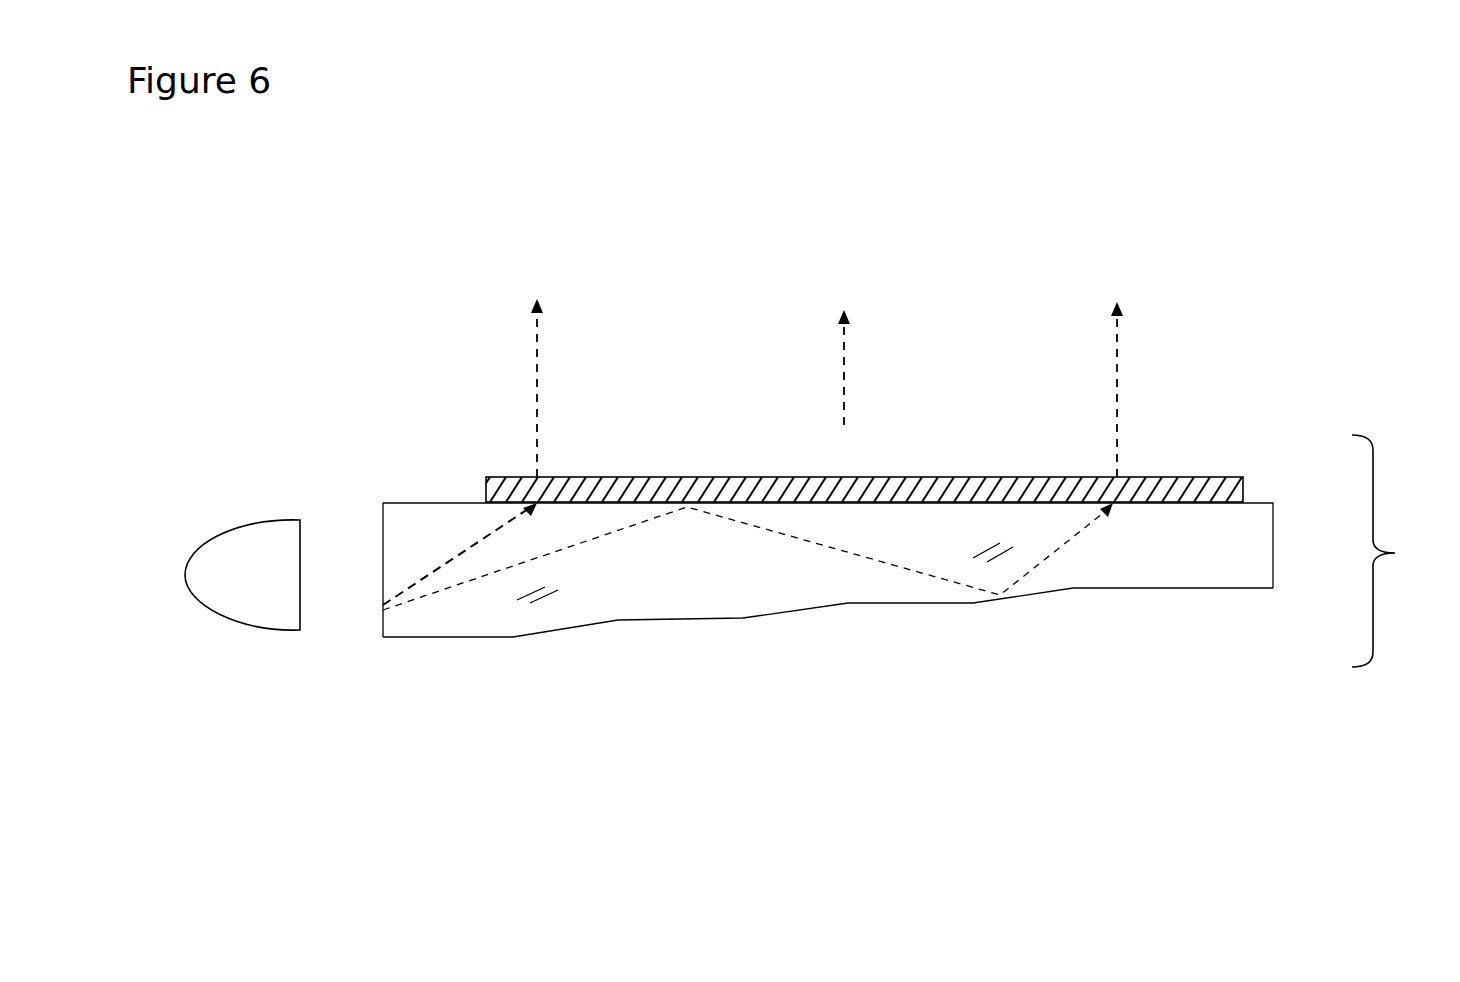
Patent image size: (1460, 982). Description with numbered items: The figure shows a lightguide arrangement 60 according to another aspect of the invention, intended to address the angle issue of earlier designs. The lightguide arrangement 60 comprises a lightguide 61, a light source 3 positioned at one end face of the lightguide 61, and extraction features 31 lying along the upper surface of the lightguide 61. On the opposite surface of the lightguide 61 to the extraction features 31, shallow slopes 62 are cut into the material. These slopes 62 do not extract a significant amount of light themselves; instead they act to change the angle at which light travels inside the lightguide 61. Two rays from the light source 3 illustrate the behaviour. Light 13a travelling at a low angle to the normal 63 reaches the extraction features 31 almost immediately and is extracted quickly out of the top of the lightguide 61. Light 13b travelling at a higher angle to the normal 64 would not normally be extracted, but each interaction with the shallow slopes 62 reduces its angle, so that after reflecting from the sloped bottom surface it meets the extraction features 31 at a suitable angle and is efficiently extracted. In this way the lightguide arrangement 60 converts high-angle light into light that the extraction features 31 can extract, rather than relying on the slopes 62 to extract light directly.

The light source 3 is at (255, 540).
The lightguide 61 is at (432, 513).
The shallow slopes 62 is at (570, 628).
The lightguide arrangement 60 is at (1396, 551).
The extraction features 31 is at (620, 482).
The light at low angle to the normal 63 is at (460, 554).
The light at higher angle to the normal 64 is at (748, 556).
The light 13a is at (533, 360).
The light 13b is at (1110, 362).